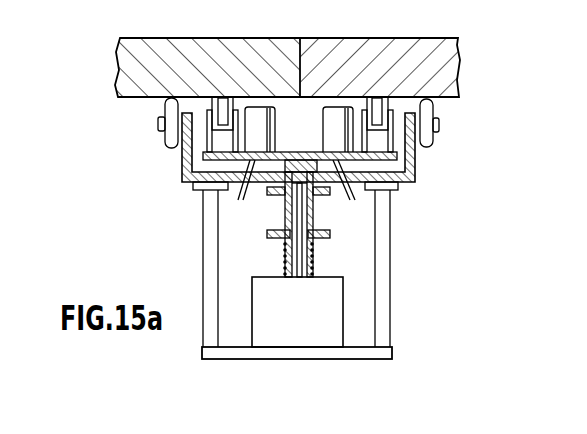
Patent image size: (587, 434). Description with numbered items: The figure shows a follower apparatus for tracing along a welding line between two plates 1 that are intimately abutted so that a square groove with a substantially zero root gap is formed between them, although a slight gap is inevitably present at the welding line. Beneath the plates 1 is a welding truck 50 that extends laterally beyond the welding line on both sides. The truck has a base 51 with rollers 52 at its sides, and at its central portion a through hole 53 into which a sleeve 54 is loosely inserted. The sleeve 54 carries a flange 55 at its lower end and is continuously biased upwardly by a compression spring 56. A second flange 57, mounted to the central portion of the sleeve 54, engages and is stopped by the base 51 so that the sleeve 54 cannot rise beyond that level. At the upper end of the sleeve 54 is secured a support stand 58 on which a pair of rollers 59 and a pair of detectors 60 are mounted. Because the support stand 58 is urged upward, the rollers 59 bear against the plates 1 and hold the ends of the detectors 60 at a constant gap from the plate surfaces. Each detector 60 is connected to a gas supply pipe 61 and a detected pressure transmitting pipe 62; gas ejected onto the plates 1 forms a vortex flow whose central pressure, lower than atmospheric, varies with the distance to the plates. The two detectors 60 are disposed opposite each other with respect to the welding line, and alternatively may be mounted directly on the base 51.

The plate 1 is at (124, 42).
The welding truck 50 is at (175, 185).
The base 51 is at (182, 158).
The roller 52 is at (165, 138).
The through hole 53 is at (265, 194).
The sleeve 54 is at (325, 238).
The flange 55 is at (268, 238).
The compression spring 56 is at (282, 258).
The flange 57 is at (322, 196).
The support stand 58 is at (414, 158).
The roller 59 is at (221, 99).
The detector 60 is at (260, 107).
The gas supply pipe 61 is at (232, 198).
The detected pressure transmitting pipe 62 is at (243, 190).